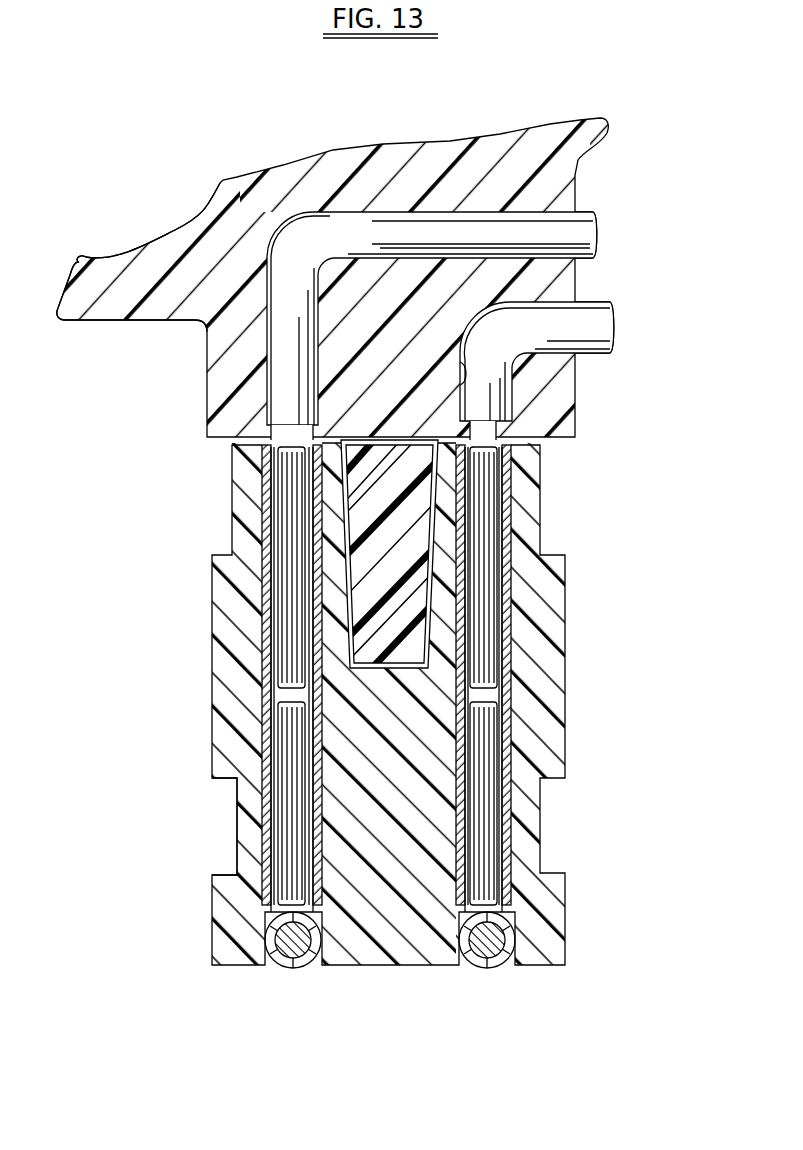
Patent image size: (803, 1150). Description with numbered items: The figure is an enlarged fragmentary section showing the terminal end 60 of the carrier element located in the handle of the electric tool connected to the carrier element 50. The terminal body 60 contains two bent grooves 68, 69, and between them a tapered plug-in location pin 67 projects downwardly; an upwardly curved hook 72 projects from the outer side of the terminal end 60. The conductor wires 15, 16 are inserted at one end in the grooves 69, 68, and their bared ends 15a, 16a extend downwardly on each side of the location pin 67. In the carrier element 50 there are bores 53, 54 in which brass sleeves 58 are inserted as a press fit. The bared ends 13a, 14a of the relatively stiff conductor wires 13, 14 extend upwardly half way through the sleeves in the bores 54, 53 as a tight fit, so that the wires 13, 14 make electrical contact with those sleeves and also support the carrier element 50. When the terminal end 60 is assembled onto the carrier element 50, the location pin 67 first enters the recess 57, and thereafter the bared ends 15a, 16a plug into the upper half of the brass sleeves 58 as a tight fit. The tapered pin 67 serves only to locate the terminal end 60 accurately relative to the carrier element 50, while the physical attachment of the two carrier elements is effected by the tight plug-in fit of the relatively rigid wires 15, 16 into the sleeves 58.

The conductor wire 13 is at (312, 967).
The conductor wire 14 is at (472, 962).
The bared end 13a is at (290, 882).
The bared end 14a is at (490, 835).
The conductor wire 15 is at (588, 230).
The conductor wire 16 is at (595, 328).
The bared end 15a is at (285, 463).
The bared end 16a is at (487, 466).
The carrier element 50 is at (567, 650).
The bore 53 is at (510, 633).
The bore 54 is at (240, 803).
The recess 57 is at (420, 615).
The brass sleeve 58 is at (265, 580).
The terminal body 60 is at (230, 370).
The plug-in location pin 67 is at (413, 545).
The bent groove 68 is at (458, 362).
The bent groove 69 is at (268, 290).
The hook 72 is at (83, 297).